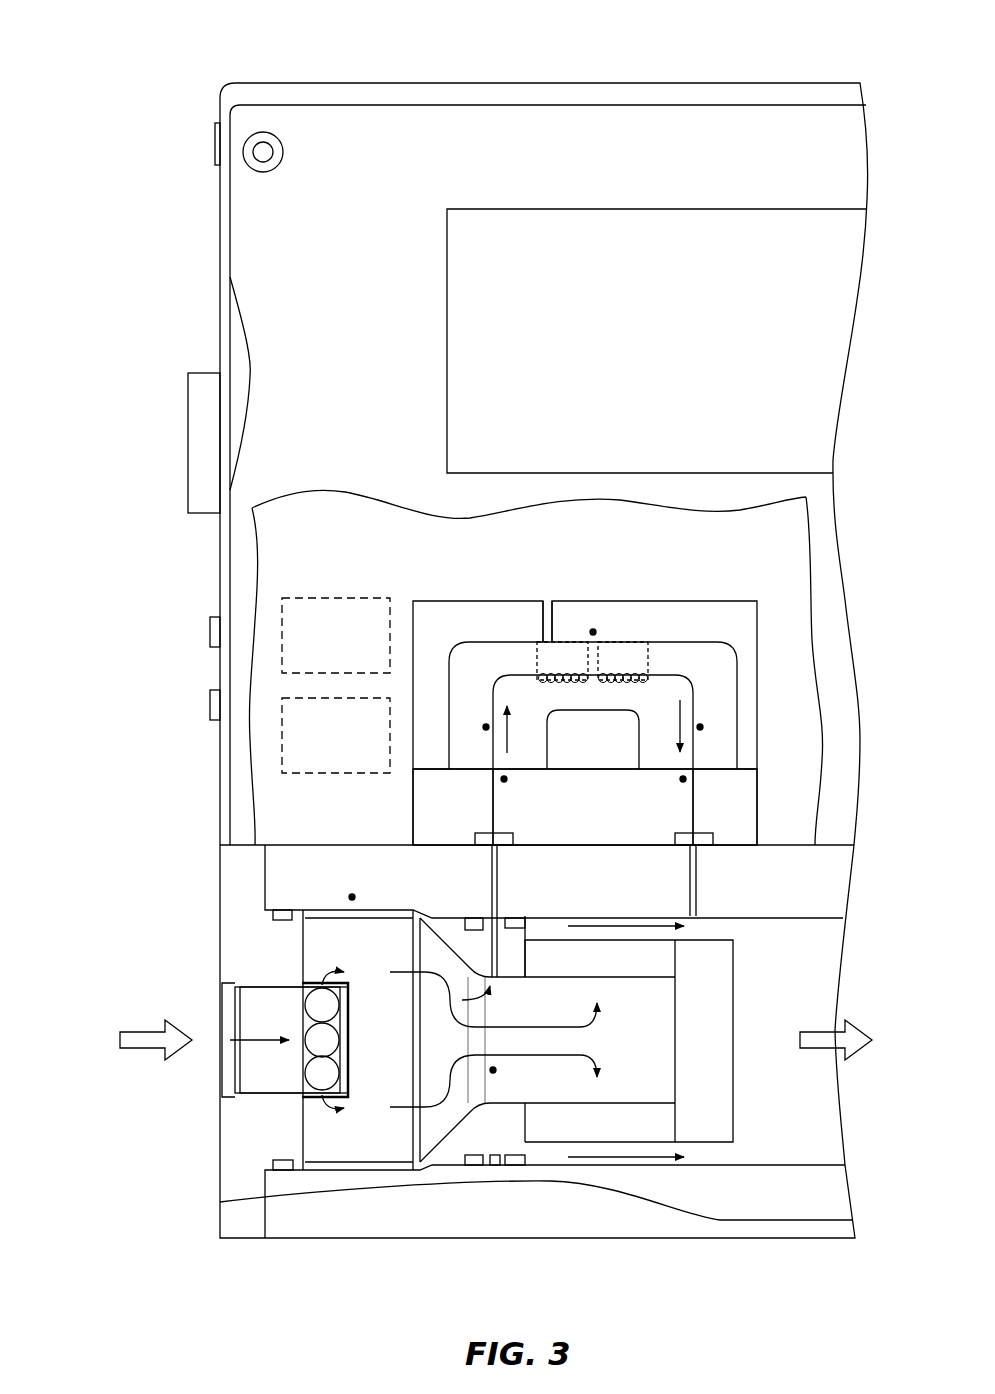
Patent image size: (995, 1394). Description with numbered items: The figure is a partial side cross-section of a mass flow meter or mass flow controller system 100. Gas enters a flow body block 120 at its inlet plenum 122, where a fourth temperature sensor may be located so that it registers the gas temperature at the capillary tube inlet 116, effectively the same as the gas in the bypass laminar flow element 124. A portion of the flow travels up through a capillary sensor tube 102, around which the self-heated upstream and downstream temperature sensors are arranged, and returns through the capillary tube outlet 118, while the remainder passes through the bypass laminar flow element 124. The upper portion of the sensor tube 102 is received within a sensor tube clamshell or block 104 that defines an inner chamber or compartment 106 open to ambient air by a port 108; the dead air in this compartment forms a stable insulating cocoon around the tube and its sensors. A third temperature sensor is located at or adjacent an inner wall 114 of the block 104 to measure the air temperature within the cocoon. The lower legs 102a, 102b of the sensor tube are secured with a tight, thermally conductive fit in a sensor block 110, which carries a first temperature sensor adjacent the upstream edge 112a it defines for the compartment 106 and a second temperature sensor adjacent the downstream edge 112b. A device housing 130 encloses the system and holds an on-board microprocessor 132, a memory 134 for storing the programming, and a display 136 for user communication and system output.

The MFM or MFC system 100 is at (495, 658).
The device housing 130 is at (735, 145).
The display 136 is at (656, 341).
The microprocessor 132 is at (282, 615).
The memory 134 is at (282, 740).
The sensor tube clamshell or block 104 is at (740, 621).
The inner chamber or compartment 106 is at (692, 670).
The port 108 is at (545, 596).
The inner wall 114 is at (618, 640).
The capillary sensor tube 102 is at (695, 700).
The upstream leg 102a is at (481, 818).
The downstream leg 102b is at (704, 811).
The sensor block 110 is at (760, 788).
The upstream edge 112a is at (533, 772).
The downstream edge 112b is at (716, 768).
The flow body block 120 is at (285, 875).
The capillary tube inlet 116 is at (497, 955).
The capillary tube outlet 118 is at (697, 912).
The inlet plenum 122 is at (337, 951).
The bypass laminar flow element 124 is at (594, 1128).